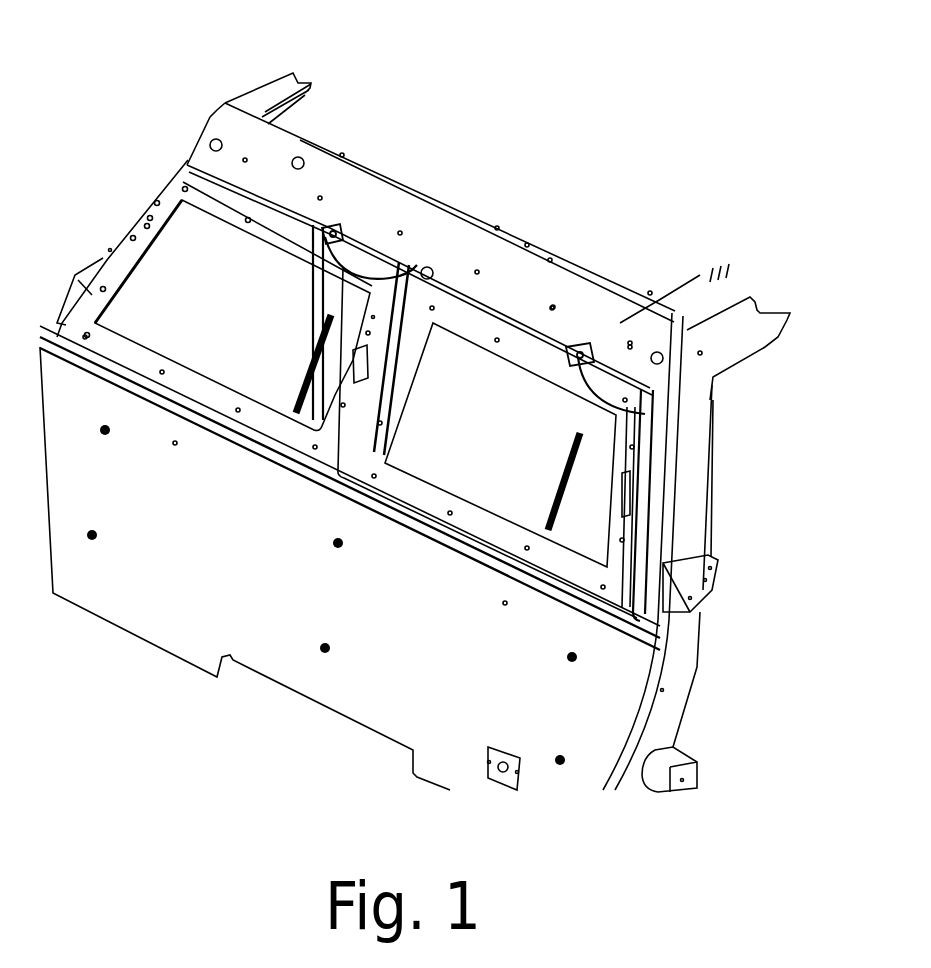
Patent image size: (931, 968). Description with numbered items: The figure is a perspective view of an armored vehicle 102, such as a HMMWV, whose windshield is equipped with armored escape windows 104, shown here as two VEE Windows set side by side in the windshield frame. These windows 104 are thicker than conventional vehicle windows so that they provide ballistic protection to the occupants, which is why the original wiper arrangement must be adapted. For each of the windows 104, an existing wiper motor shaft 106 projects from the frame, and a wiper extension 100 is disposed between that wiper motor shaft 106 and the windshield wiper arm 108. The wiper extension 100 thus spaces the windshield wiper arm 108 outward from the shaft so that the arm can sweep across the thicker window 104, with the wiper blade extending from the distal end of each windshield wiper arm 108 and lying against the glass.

The wiper extension 100 is at (338, 250).
The armored vehicle 102 is at (318, 157).
The armored escape window 104 is at (265, 262).
The wiper motor shaft 106 is at (330, 247).
The windshield wiper arm 108 is at (417, 265).